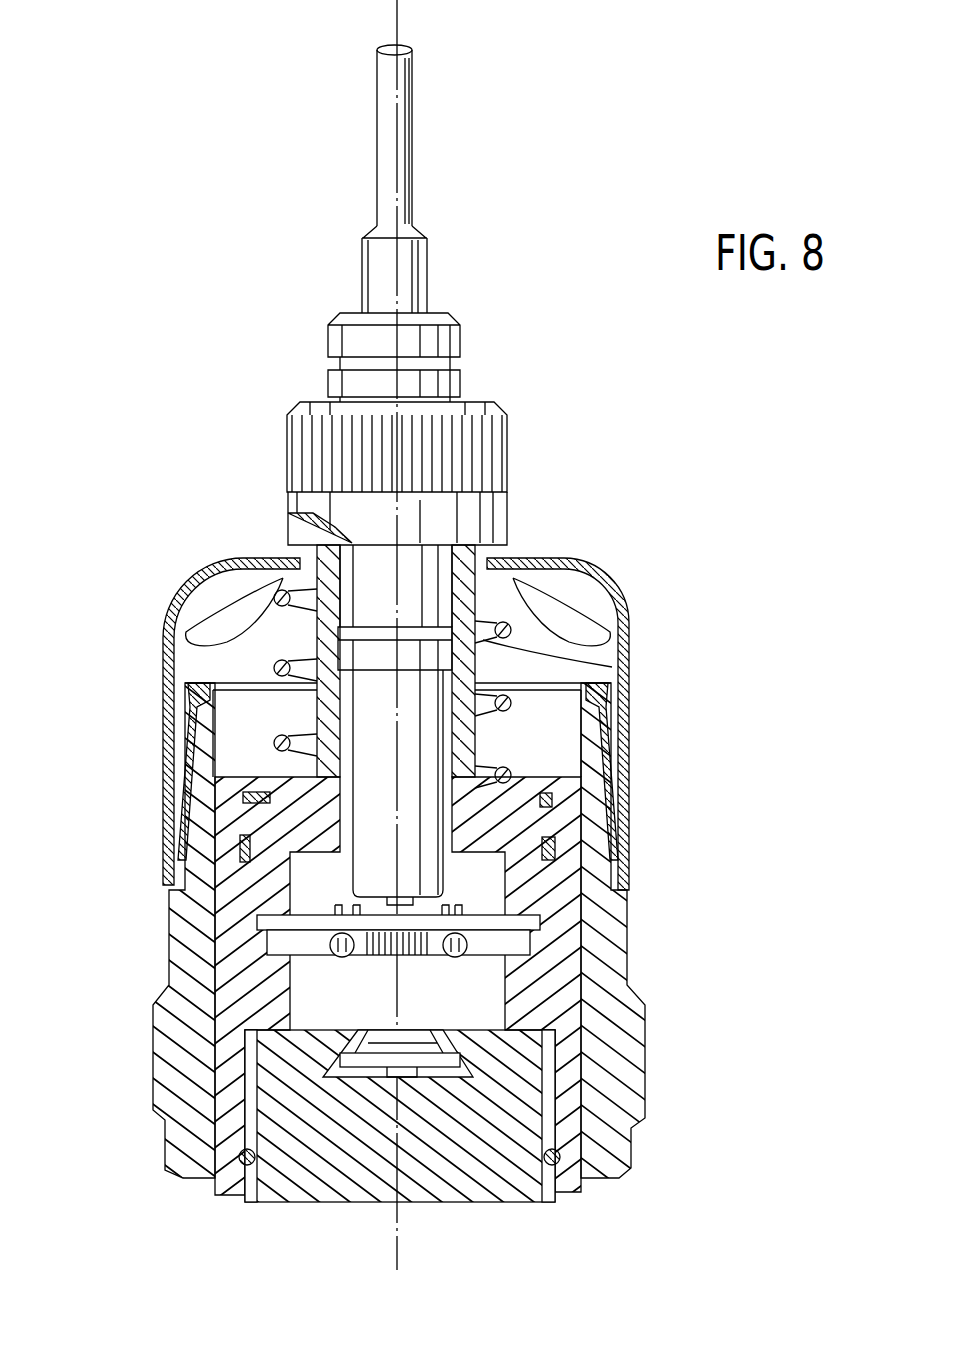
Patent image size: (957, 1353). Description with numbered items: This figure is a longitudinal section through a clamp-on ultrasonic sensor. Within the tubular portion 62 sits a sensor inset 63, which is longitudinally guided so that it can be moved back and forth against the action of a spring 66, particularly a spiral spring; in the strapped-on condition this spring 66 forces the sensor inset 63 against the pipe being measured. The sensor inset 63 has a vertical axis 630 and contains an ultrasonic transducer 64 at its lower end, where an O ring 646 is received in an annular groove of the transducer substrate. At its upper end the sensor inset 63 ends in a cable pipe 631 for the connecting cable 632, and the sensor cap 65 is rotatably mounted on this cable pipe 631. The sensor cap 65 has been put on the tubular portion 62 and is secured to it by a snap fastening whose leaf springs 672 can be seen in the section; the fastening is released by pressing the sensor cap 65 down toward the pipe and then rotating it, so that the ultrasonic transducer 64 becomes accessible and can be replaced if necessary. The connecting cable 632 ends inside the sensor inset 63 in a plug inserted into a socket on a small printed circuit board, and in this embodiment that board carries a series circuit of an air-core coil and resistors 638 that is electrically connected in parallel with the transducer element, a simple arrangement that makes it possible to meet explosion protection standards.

The tubular portion 62 is at (625, 1075).
The sensor inset 63 is at (565, 812).
The ultrasonic transducer 64 is at (485, 1180).
The sensor cap 65 is at (607, 592).
The spring 66 is at (612, 668).
The vertical axis 630 is at (407, 173).
The cable pipe 631 is at (300, 353).
The connecting cable 632 is at (385, 106).
The resistors 638 is at (342, 955).
The O ring 646 is at (252, 1193).
The leaf springs 672 is at (185, 720).